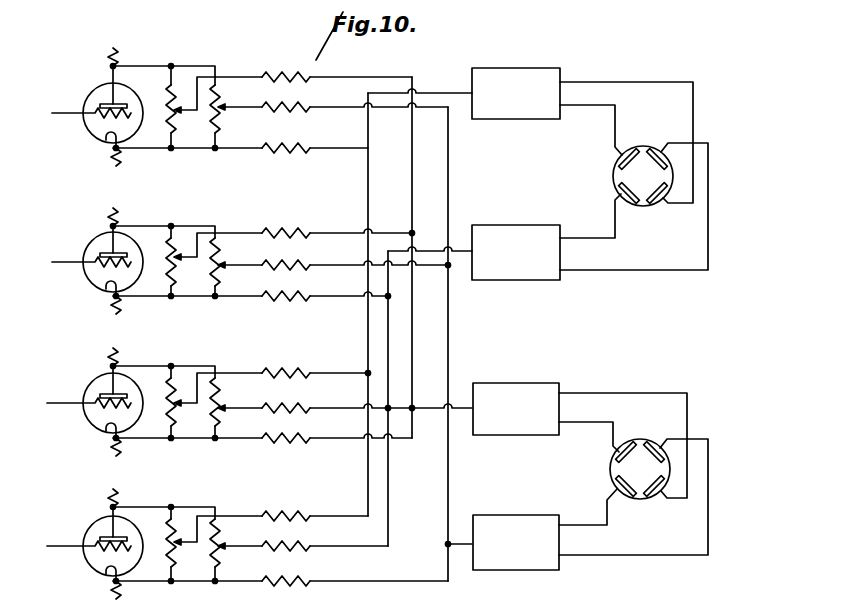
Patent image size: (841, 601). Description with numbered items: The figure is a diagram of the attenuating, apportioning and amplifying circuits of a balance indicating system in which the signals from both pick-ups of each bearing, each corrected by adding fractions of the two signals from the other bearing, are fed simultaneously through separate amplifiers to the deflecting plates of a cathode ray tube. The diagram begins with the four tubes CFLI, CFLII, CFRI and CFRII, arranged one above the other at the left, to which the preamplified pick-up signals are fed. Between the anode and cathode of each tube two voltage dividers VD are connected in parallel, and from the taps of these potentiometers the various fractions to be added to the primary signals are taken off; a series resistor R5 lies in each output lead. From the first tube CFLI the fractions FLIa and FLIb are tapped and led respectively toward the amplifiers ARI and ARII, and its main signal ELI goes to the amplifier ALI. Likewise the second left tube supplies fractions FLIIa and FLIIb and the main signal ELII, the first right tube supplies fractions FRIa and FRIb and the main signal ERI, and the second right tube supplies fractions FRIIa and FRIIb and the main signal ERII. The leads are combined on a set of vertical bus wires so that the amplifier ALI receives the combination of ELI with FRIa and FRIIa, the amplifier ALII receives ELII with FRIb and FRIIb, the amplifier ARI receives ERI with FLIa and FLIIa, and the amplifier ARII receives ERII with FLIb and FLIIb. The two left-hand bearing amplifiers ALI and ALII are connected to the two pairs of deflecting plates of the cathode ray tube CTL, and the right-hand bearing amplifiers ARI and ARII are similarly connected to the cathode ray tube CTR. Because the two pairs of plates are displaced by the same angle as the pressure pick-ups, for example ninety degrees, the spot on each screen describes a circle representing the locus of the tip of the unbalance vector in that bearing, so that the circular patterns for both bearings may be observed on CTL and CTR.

The tube CFLI is at (100, 88).
The tube CFLII is at (98, 240).
The tube CFRI is at (97, 385).
The tube CFRII is at (93, 524).
The voltage dividers VD is at (222, 48).
The resistor R5 is at (274, 70).
The fraction FLIa is at (361, 68).
The fraction FLIb is at (355, 101).
The main signal ELI is at (315, 141).
The fraction FLIIa is at (337, 227).
The fraction FLIIb is at (355, 258).
The main signal ELII is at (325, 289).
The fraction FRIa is at (315, 366).
The fraction FRIb is at (367, 401).
The main signal ERI is at (337, 431).
The fraction FRIIa is at (315, 509).
The fraction FRIIb is at (325, 539).
The main signal ERII is at (355, 573).
The main amplifier ALI is at (516, 93).
The main amplifier ALII is at (516, 252).
The main amplifier ARI is at (516, 409).
The main amplifier ARII is at (516, 542).
The cathode ray tube CTL is at (634, 176).
The cathode ray tube CTR is at (633, 474).